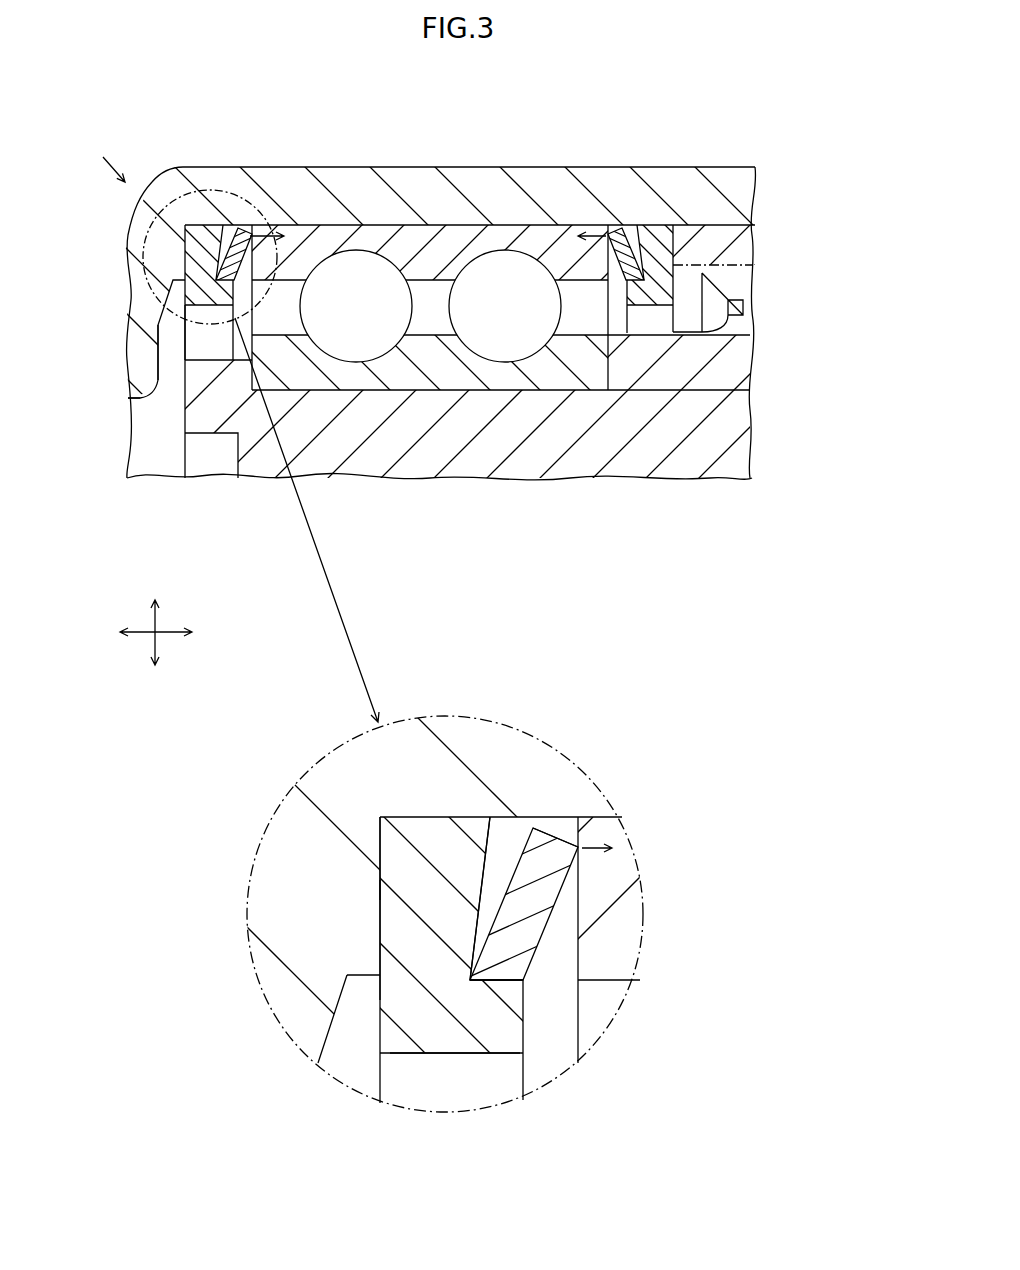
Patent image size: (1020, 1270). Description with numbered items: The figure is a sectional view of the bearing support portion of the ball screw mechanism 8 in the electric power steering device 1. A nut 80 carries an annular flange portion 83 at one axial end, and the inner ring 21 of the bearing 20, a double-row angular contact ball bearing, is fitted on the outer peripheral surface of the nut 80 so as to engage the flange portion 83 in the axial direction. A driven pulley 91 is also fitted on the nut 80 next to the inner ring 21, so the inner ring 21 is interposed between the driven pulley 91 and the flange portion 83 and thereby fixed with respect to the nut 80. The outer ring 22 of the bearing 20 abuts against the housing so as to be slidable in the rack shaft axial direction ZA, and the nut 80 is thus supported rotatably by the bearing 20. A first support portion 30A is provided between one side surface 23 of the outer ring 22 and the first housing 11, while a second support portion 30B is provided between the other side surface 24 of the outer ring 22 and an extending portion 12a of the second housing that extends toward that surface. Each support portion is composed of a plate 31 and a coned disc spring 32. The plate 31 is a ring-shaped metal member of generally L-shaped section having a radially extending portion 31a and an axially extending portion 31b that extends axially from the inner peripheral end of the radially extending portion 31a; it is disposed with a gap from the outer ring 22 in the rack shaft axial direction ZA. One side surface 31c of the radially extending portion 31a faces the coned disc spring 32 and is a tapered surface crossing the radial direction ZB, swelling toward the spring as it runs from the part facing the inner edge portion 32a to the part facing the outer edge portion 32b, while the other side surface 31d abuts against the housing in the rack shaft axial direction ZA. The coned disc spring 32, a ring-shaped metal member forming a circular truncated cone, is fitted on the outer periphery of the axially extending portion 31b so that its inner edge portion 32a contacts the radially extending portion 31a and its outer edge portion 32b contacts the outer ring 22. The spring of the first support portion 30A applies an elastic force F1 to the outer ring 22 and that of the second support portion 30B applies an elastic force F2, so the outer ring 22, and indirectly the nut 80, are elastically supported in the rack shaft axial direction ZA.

The electric power steering device 1 is at (105, 160).
The rotating member 8 is at (175, 374).
The nut 80 is at (183, 417).
The flange portion 83 is at (203, 353).
The driven pulley 91 is at (757, 352).
The first housing 11 is at (703, 167).
The extending portion 12a is at (740, 225).
The bearing 20 is at (393, 222).
The inner ring 21 is at (428, 352).
The outer ring 22 is at (463, 237).
The one side surface 23 is at (257, 226).
The other side surface 24 is at (607, 232).
The first support portion 30A is at (190, 222).
The second support portion 30B is at (658, 222).
The plate 31 is at (185, 270).
The radially extending portion 31a is at (395, 903).
The axially extending portion 31b is at (503, 1045).
The one side surface 31c is at (500, 833).
The other side surface 31d is at (380, 840).
The coned disc spring 32 is at (218, 267).
The inner edge portion 32a is at (475, 960).
The outer edge portion 32b is at (582, 850).
The elastic force F1 is at (446, 550).
The elastic force F2 is at (576, 240).
The rack shaft axial direction ZA is at (173, 632).
The radial direction ZB is at (156, 618).